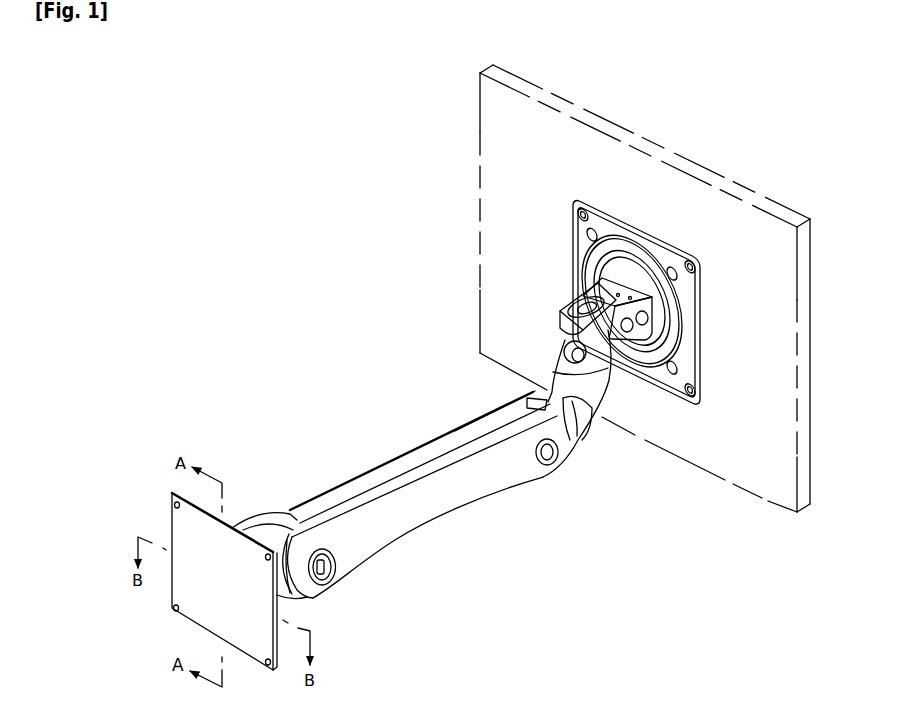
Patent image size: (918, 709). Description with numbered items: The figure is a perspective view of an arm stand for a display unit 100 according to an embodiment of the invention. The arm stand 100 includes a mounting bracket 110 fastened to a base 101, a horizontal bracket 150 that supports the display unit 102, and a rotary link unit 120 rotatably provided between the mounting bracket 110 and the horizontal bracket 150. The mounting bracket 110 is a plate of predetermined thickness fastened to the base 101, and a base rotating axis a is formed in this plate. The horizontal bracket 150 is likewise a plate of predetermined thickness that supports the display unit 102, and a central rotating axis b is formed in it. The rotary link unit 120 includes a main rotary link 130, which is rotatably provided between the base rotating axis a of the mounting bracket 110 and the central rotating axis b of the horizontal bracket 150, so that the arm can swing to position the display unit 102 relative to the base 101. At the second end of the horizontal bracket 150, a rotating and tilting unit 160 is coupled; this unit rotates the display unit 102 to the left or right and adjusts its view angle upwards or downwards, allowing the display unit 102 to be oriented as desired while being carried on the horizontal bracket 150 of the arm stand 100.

The arm stand for the display unit 100 is at (317, 367).
The base 101 is at (210, 592).
The display unit 102 is at (738, 450).
The mounting bracket 110 is at (257, 512).
The rotary link unit 120 is at (450, 517).
The main rotary link 130 is at (405, 458).
The horizontal bracket 150 is at (547, 377).
The rotating and tilting unit 160 is at (560, 298).
The base rotating axis a is at (334, 567).
The central rotating axis b is at (556, 456).